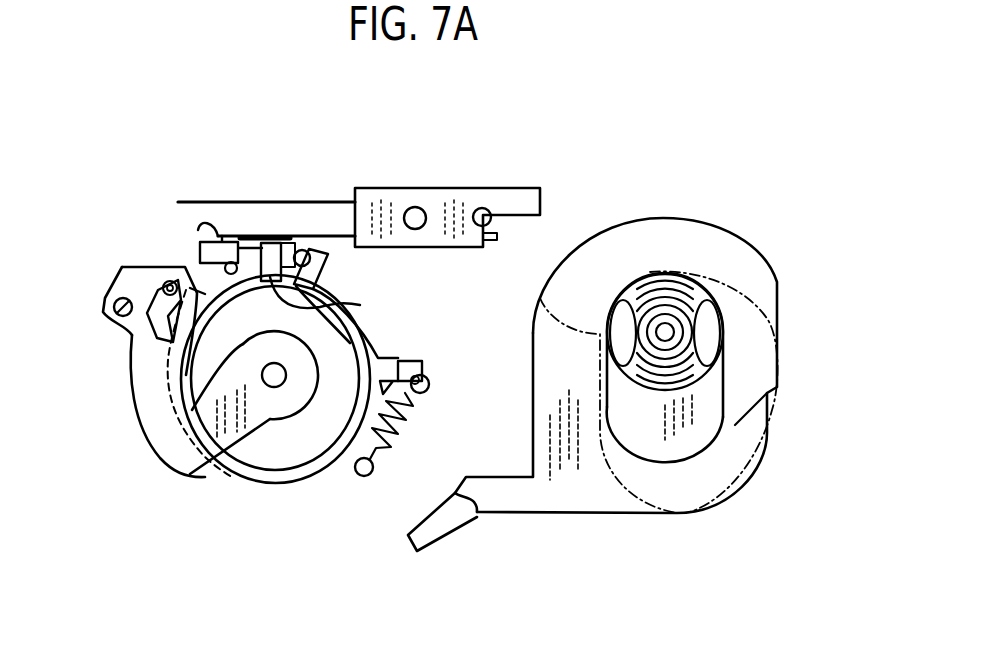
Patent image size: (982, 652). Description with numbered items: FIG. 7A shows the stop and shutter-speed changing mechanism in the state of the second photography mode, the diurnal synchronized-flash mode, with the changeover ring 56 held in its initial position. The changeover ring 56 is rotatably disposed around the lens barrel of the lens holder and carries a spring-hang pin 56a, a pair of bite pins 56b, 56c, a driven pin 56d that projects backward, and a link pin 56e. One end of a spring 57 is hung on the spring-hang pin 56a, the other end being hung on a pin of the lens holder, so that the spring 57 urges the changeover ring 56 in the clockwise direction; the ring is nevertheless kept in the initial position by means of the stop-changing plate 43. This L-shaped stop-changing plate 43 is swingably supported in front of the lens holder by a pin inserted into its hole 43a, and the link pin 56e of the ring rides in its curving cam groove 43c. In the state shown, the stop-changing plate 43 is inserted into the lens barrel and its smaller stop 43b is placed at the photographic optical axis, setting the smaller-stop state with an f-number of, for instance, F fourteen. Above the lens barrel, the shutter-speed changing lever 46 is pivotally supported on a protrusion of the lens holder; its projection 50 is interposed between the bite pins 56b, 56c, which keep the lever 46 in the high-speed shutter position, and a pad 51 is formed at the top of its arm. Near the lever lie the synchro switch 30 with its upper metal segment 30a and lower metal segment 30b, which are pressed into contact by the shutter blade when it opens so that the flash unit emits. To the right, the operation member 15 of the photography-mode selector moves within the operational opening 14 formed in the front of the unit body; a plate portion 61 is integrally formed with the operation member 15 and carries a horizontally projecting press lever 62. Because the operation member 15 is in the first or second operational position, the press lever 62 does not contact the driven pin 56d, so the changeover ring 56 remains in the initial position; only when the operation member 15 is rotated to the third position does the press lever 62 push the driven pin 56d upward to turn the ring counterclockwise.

The operational opening 14 is at (545, 310).
The operation member 15 is at (645, 437).
The synchro switch 30 is at (401, 188).
The upper metal segment 30a is at (187, 202).
The lower metal segment 30b is at (338, 235).
The stop-changing plate 43 is at (148, 439).
The hole 43a is at (114, 308).
The smaller stop 43b is at (274, 388).
The curving cam groove 43c is at (160, 340).
The shutter-speed changing lever 46 is at (268, 227).
The projection 50 is at (304, 250).
The pad 51 is at (221, 236).
The changeover ring 56 is at (313, 480).
The spring-hang pin 56a is at (420, 362).
The bite pin 56b is at (325, 262).
The bite pin 56c is at (360, 305).
The driven pin 56d is at (430, 388).
The link pin 56e is at (165, 280).
The spring 57 is at (398, 436).
The plate portion 61 is at (737, 480).
The press lever 62 is at (432, 530).